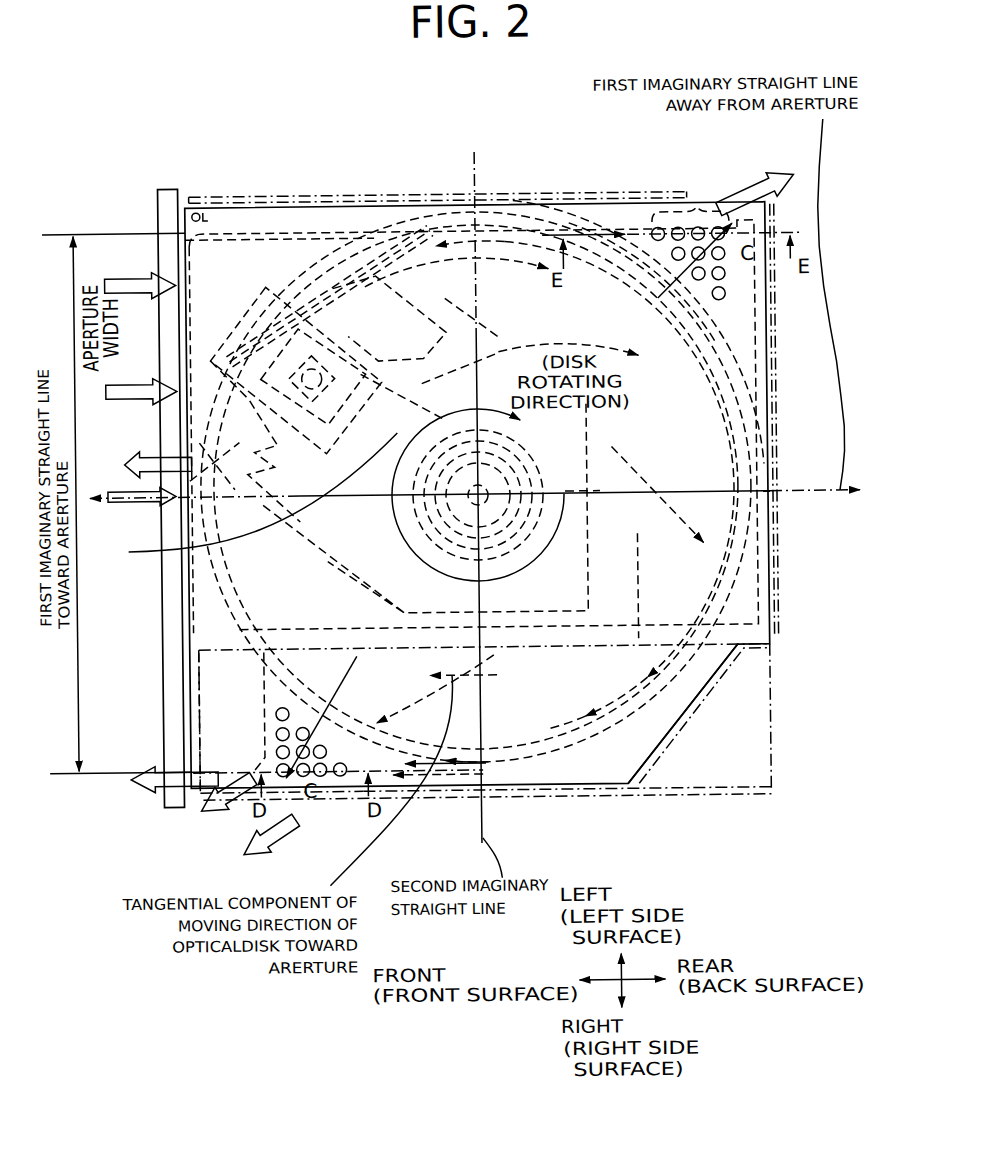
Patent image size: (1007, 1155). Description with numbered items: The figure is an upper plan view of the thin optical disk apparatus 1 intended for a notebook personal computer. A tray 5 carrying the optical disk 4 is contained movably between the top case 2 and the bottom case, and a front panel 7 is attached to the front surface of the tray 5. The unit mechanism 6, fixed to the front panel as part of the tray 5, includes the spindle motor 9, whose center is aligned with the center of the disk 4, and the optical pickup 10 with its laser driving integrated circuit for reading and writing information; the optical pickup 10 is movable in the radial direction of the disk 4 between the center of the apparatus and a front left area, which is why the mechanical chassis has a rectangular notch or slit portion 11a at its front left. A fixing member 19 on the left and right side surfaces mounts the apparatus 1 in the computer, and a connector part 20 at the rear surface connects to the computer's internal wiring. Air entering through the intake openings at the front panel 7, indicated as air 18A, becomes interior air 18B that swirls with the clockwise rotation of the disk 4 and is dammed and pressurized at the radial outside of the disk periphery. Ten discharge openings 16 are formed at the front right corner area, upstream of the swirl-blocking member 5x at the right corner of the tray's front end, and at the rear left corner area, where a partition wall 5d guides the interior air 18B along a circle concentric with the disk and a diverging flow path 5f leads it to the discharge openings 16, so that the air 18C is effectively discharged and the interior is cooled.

The optical disk apparatus 1 is at (441, 184).
The top case 2 is at (566, 772).
The optical disk 4 is at (578, 300).
The tray 5 is at (752, 348).
The partition wall 5d is at (604, 250).
The diverging flow path 5f is at (642, 268).
The member for blocking the swirl flow 5x is at (210, 690).
The unit mechanism 6 is at (447, 318).
The front panel 7 is at (168, 596).
The spindle motor 9 is at (498, 490).
The optical pickup 10 is at (326, 340).
The notch or slit portion 11a is at (244, 498).
The discharge openings 16 is at (690, 213).
The air flow through aperture 18A is at (120, 276).
The interior air 18B is at (628, 634).
The discharged air 18C is at (755, 178).
The fixing member 19 is at (528, 196).
The connector part 20 is at (776, 553).